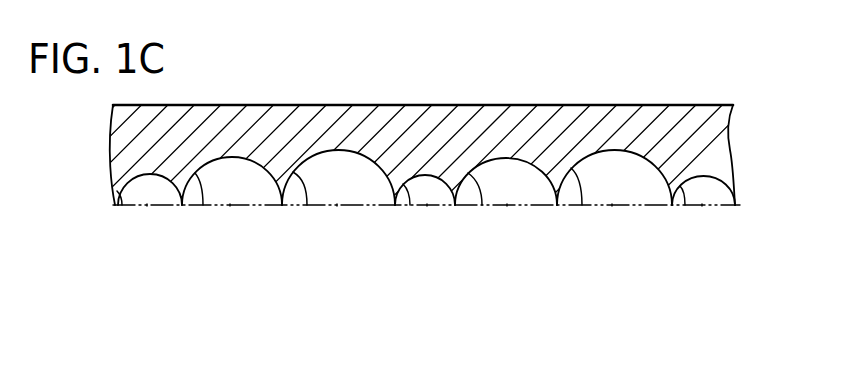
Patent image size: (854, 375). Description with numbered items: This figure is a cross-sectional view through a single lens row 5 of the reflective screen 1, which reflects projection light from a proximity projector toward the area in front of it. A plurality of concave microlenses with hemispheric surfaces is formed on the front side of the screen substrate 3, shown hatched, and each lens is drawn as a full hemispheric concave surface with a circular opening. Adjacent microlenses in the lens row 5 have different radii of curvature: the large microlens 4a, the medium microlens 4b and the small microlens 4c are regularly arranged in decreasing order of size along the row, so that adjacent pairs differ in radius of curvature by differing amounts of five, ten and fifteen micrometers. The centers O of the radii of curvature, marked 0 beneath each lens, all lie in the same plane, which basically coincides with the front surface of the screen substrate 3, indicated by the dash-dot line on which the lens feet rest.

The reflective screen 1 is at (499, 82).
The screen substrate 3 is at (612, 123).
The microlens with a large curvature 4a is at (308, 207).
The microlens with a medium curvature 4b is at (205, 207).
The microlens with a small curvature 4c is at (128, 207).
The lens row 5 is at (645, 233).
The centers O of the radii of curvature 0 is at (147, 207).